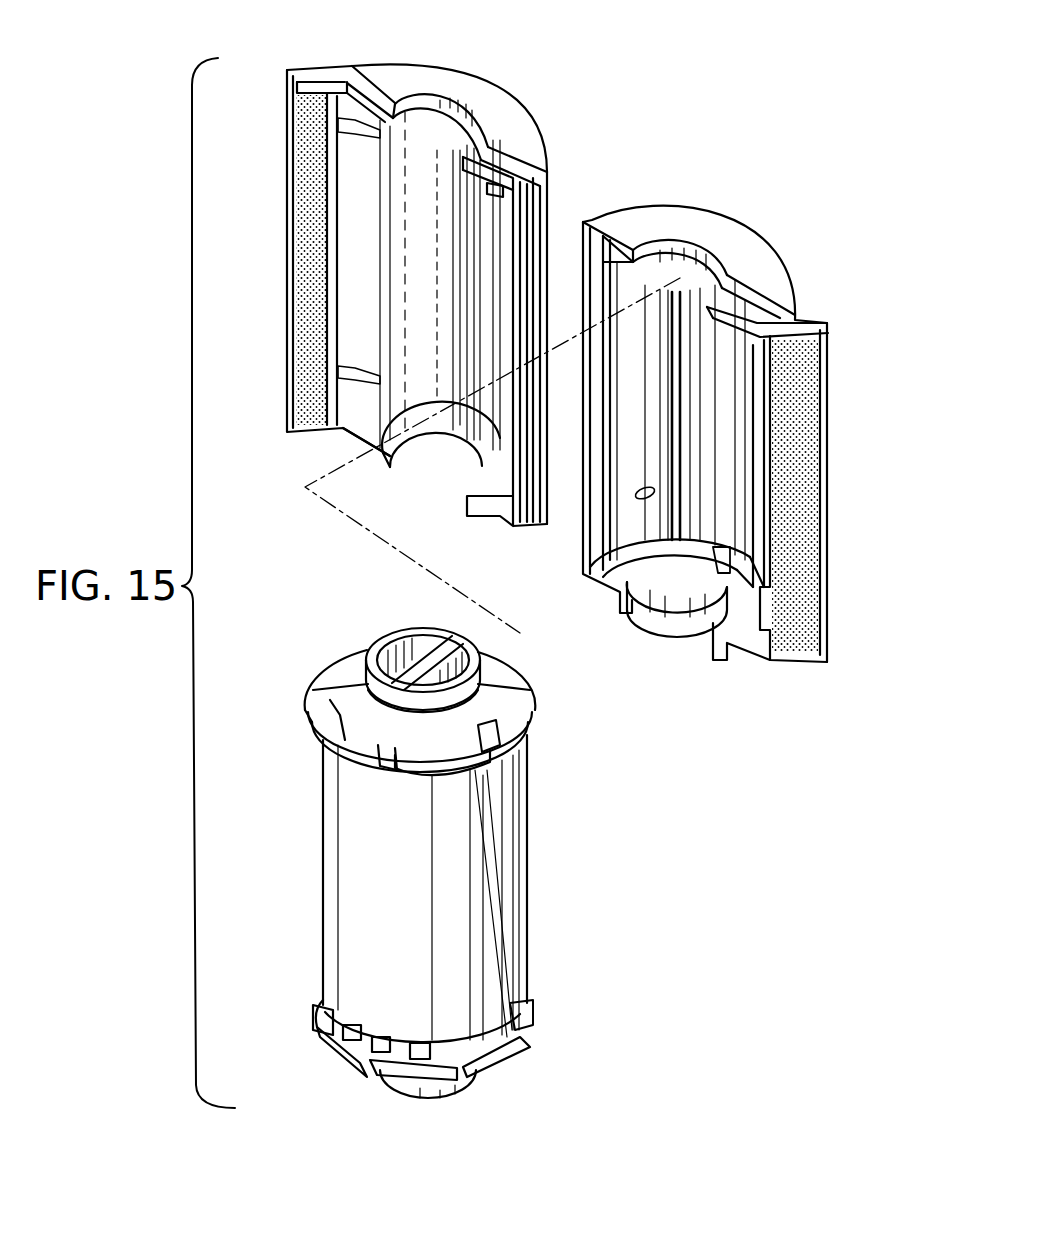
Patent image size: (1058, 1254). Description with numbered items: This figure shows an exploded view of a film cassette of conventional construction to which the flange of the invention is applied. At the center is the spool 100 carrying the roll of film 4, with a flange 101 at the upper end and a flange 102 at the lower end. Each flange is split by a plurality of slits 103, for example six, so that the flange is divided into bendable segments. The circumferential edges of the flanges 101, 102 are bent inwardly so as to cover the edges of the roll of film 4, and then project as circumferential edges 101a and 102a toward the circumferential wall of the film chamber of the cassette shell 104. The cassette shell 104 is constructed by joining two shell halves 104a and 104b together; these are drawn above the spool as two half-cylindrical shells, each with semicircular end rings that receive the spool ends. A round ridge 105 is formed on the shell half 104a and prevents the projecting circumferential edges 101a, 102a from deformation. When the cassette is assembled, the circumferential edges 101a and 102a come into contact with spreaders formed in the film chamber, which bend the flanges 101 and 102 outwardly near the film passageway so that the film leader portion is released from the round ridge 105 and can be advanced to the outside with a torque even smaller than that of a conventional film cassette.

The roll of film 4 is at (487, 903).
The spool 100 is at (368, 618).
The flange 101 is at (325, 668).
The circumferential edge 101a is at (528, 745).
The flange 102 is at (313, 1010).
The circumferential edge 102a is at (517, 1055).
The slits 103 is at (520, 664).
The cassette shell 104 is at (699, 5).
The shell half 104a is at (662, 203).
The shell half 104b is at (525, 92).
The round ridge 105 is at (720, 548).